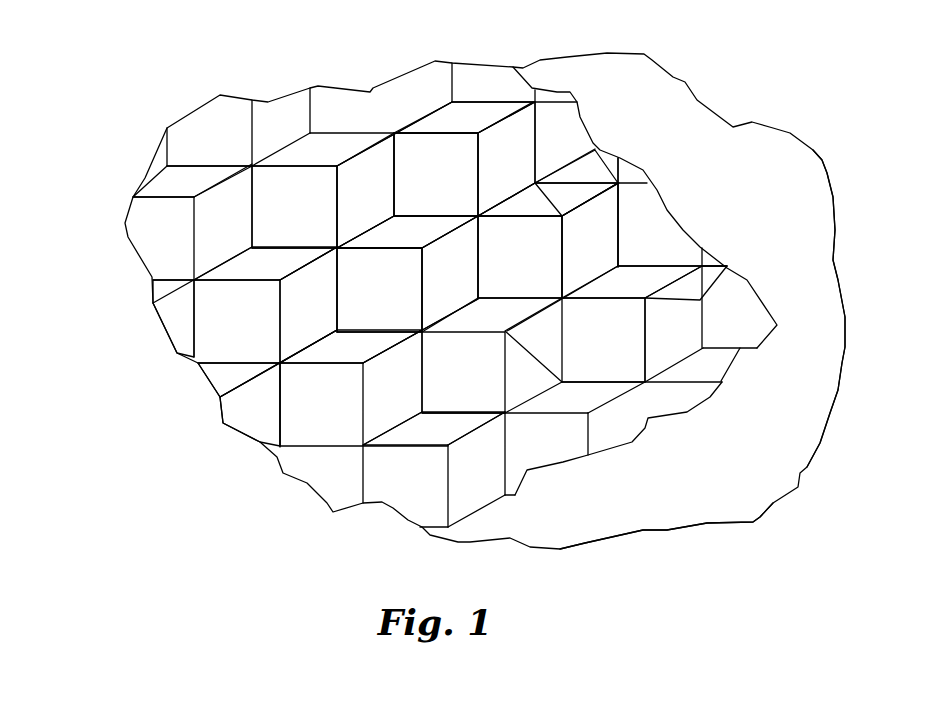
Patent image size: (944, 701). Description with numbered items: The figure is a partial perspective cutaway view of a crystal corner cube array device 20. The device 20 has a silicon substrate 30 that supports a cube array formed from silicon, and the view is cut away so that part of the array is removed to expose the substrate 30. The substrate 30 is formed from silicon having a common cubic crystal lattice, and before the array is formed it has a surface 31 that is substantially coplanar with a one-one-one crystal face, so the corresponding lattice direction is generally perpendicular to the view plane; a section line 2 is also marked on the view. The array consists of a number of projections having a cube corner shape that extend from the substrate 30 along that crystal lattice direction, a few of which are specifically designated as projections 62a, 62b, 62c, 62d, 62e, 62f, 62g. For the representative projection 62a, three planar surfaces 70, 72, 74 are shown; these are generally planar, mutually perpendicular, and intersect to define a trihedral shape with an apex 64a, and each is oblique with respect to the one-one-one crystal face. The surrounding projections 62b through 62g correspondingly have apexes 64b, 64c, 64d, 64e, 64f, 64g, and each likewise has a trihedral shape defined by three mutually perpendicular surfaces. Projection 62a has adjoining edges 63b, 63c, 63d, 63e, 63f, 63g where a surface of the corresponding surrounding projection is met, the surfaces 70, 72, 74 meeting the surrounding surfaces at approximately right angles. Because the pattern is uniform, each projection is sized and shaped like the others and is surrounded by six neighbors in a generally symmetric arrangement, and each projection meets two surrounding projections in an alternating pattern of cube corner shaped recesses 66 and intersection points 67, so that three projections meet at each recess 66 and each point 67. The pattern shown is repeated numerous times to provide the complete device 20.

The section line 2 is at (278, 90).
The crystal corner cube array device 20 is at (485, 283).
The silicon substrate 30 is at (666, 540).
The surface 31 is at (772, 410).
The projection 62a is at (567, 152).
The projection 62b is at (294, 144).
The projection 62c is at (464, 73).
The projection 62d is at (602, 239).
The projection 62e is at (430, 439).
The projection 62f is at (231, 424).
The projection 62g is at (129, 330).
The adjoining edge 63b is at (182, 158).
The adjoining edge 63c is at (436, 116).
The adjoining edge 63d is at (625, 178).
The adjoining edge 63e is at (718, 280).
The adjoining edge 63f is at (403, 481).
The adjoining edge 63g is at (223, 290).
The apex 64a is at (205, 404).
The apex 64b is at (365, 149).
The apex 64c is at (550, 139).
The apex 64d is at (608, 208).
The apex 64e is at (656, 336).
The apex 64f is at (336, 430).
The apex 64g is at (211, 305).
The cube corner shaped recess 66 is at (442, 247).
The intersection point 67 is at (338, 297).
The planar surface 70 is at (375, 300).
The planar surface 72 is at (437, 285).
The planar surface 74 is at (398, 238).